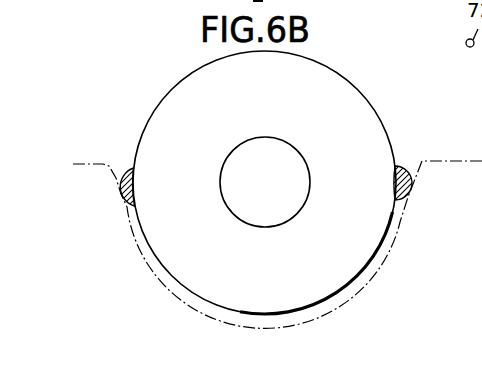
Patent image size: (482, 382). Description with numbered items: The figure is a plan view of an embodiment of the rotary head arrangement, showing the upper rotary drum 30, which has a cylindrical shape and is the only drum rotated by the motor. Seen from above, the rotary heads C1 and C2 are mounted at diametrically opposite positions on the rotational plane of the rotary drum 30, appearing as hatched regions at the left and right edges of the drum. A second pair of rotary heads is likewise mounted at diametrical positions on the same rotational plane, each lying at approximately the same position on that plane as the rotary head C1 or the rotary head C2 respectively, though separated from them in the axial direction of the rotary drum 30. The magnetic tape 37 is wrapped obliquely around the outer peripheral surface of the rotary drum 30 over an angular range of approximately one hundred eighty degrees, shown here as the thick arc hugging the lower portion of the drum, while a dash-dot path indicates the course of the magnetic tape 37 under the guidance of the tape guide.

The upper rotary drum 30 is at (357, 90).
The magnetic tape 37 is at (400, 203).
The rotary head C1 is at (124, 168).
The rotary head C2 is at (404, 167).